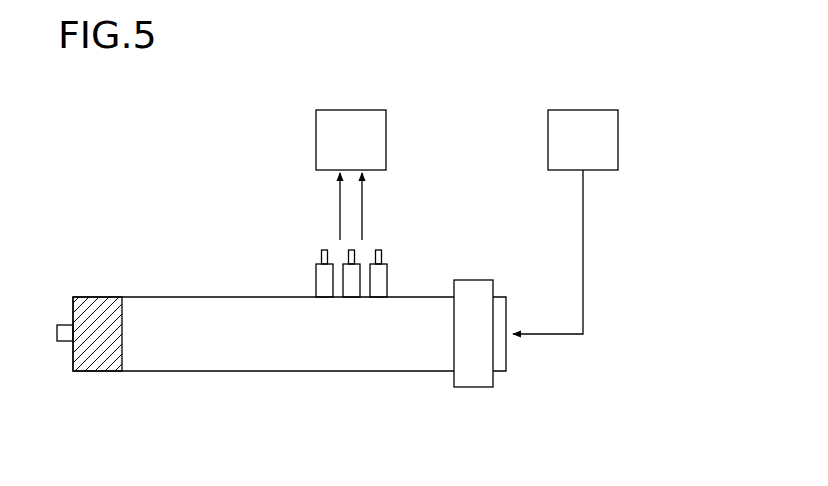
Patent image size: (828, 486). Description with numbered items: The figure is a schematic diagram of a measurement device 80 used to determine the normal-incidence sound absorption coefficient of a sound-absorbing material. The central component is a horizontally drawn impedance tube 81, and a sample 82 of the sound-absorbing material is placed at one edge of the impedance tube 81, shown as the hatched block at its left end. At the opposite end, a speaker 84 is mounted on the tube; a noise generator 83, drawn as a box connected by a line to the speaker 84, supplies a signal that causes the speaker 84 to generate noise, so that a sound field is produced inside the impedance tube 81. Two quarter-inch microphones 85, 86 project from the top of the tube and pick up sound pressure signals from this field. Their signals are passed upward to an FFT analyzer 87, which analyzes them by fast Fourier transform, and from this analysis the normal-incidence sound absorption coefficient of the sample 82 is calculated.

The measurement device 80 is at (184, 128).
The impedance tube 81 is at (309, 360).
The sample 82 is at (97, 358).
The noise generator 83 is at (608, 146).
The speaker 84 is at (472, 378).
The ¼-inch microphone 85 is at (385, 268).
The ¼-inch microphone 86 is at (320, 268).
The FFT analyzer 87 is at (375, 146).